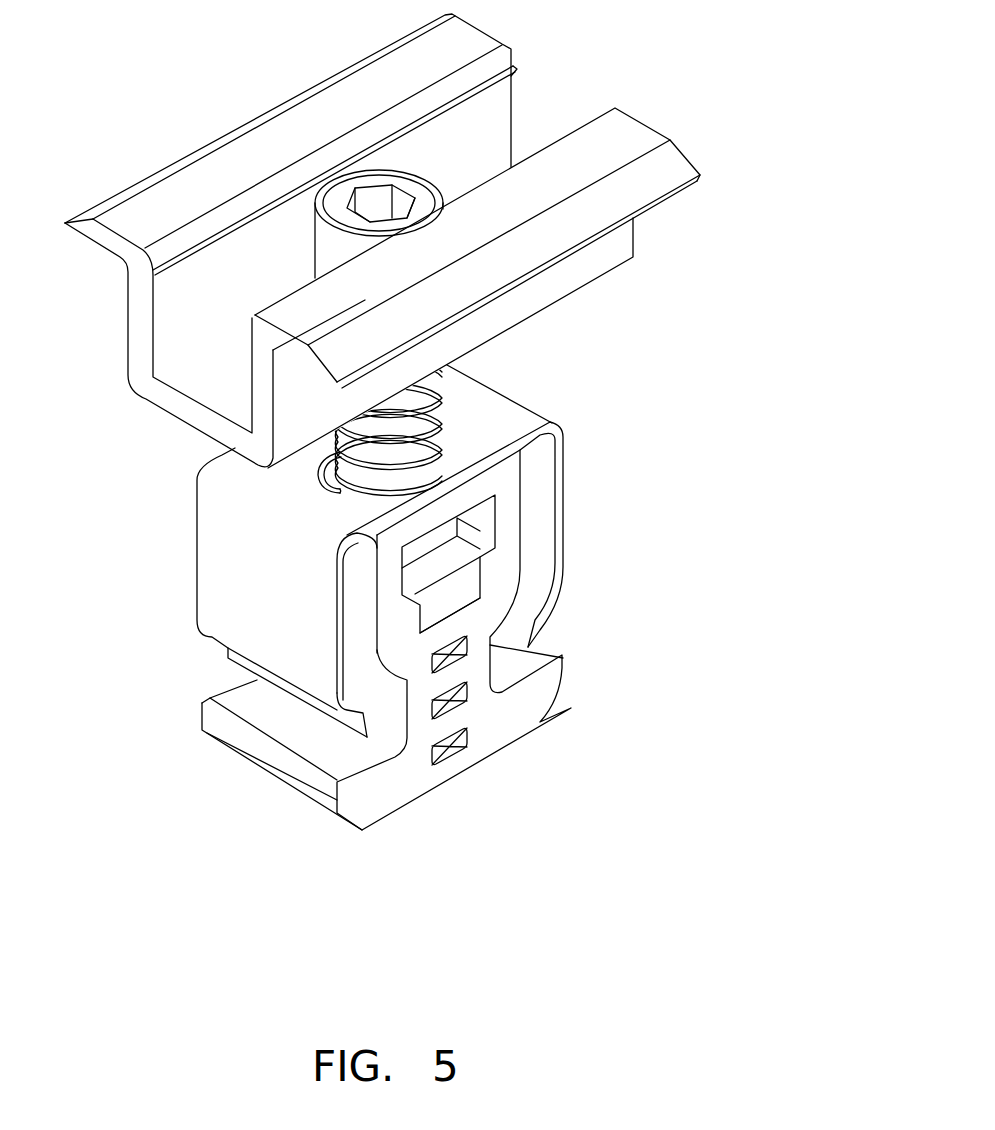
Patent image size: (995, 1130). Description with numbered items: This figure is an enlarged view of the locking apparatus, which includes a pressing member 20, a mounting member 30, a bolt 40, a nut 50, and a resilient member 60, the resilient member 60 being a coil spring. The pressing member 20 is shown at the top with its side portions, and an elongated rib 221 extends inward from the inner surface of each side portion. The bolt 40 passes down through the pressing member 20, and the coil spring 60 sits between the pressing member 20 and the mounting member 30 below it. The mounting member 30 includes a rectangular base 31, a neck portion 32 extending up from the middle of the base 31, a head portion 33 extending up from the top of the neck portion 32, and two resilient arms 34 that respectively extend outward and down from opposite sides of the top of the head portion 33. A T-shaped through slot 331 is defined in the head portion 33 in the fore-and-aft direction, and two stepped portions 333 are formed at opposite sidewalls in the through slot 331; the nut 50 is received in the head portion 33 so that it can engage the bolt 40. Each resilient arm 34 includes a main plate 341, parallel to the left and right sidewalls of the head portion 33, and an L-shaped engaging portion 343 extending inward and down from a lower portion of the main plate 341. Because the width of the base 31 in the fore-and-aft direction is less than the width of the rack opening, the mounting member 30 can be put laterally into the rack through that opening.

The pressing member 20 is at (391, 236).
The elongated rib 221 is at (499, 62).
The bolt 40 is at (367, 200).
The resilient member 60 is at (437, 410).
The mounting member 30 is at (389, 600).
The base 31 is at (477, 750).
The neck portion 32 is at (473, 677).
The head portion 33 is at (508, 517).
The through slot 331 is at (442, 603).
The stepped portions 333 is at (482, 548).
The nut 50 is at (432, 547).
The resilient arms 34 is at (232, 639).
The main plate 341 is at (237, 610).
The engaging portion 343 is at (365, 718).